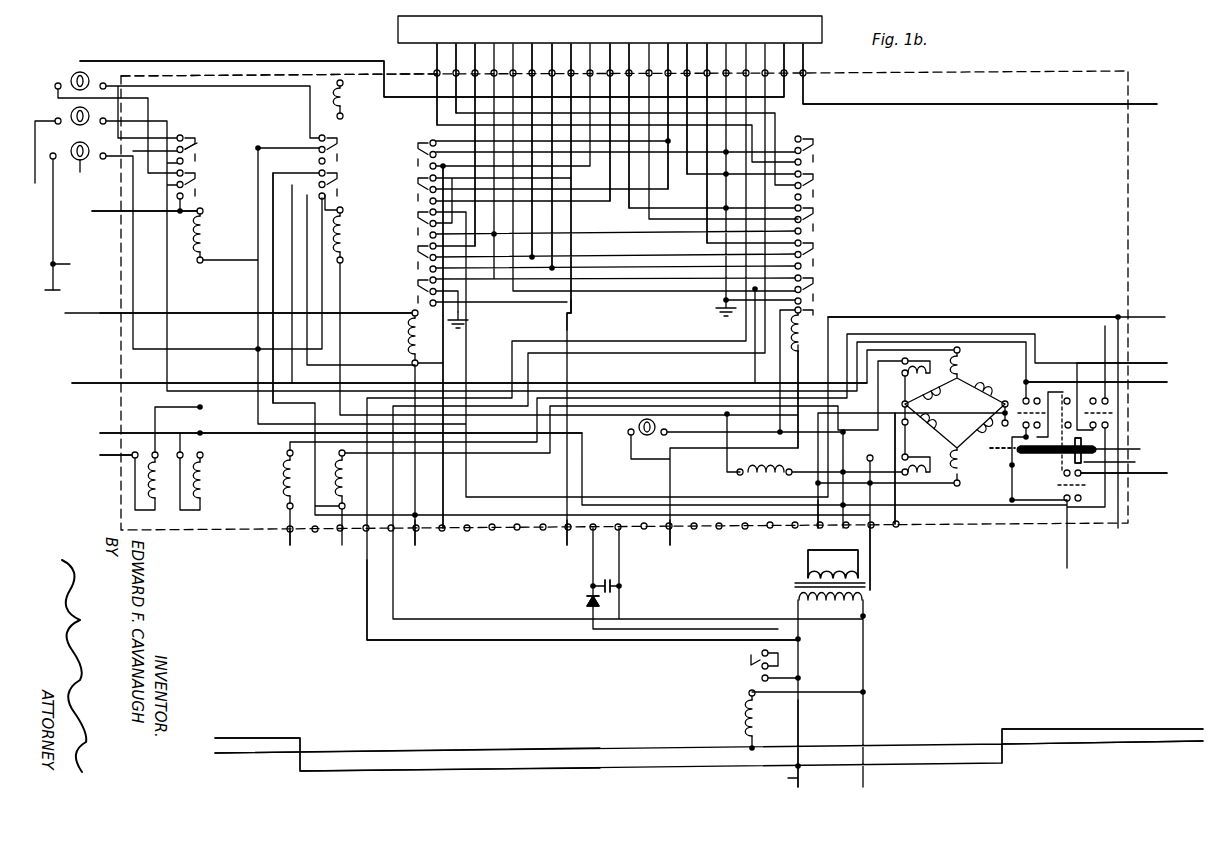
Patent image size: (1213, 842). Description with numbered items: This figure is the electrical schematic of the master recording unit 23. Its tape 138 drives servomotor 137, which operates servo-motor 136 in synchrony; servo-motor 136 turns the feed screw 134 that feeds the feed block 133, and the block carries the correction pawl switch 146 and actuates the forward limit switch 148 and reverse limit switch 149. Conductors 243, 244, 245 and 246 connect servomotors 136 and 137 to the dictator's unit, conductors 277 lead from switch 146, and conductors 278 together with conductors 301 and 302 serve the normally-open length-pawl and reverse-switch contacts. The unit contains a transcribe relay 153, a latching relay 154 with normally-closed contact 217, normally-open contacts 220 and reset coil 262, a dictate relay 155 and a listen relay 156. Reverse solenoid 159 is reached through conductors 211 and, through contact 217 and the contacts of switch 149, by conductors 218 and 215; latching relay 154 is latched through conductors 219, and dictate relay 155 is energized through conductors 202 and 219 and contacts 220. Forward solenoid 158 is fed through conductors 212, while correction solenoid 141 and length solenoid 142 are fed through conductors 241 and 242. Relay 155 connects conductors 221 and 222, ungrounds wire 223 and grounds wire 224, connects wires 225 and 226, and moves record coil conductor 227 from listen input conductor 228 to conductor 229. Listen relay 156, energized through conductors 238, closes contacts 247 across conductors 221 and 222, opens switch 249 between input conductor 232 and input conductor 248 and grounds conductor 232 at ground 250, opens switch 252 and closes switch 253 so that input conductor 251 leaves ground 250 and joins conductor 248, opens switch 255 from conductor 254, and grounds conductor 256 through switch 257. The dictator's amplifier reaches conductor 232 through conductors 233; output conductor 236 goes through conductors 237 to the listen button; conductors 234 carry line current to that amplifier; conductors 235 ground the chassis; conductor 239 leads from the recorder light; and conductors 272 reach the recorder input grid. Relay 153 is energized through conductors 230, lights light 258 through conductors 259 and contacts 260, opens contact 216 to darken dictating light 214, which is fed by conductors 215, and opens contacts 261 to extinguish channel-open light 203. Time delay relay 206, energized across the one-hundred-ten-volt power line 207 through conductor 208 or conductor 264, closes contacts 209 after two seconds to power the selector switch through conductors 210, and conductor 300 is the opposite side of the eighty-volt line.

The light 203 is at (79, 73).
The light 258 is at (72, 111).
The conductors 259 is at (38, 149).
The dictating light 214 is at (92, 175).
The conductor 239 is at (168, 61).
The conductor 256 is at (438, 62).
The conductors 272 is at (806, 55).
The master recording unit 23 is at (992, 70).
The conductor 254 is at (437, 50).
The input conductor 251 is at (456, 52).
The input conductor 248 is at (475, 52).
The conductor 221 is at (532, 52).
The output conductor 236 is at (571, 52).
The wire 224 is at (629, 52).
The conductor 229 is at (668, 52).
The listen input conductor 228 is at (707, 52).
The normally-closed contact 216 is at (197, 131).
The switch contacts 260 is at (200, 150).
The switch contacts 261 is at (200, 181).
The normally-closed contact 217 is at (340, 160).
The normally-open contacts 220 is at (340, 186).
The reset coil 262 is at (348, 101).
The conductors 230 is at (129, 214).
The transcribe relay 153 is at (206, 215).
The latching relay 154 is at (347, 233).
The conductors 218 is at (1042, 307).
The conductors 215 is at (68, 288).
The conductors 202 is at (240, 321).
The conductors 211 is at (290, 302).
The conductors 219 is at (320, 286).
The dictate relay 155 is at (422, 340).
The conductors 233 is at (1165, 317).
The servomotor 137 is at (962, 378).
The tape 138 is at (1002, 363).
The reverse limit switch 149 is at (1018, 397).
The correction pawl switch 146 is at (1057, 392).
The conductors 277 is at (1138, 366).
The conductor 302 is at (1112, 385).
The forward limit switch 148 is at (1112, 420).
The feed screw 134 is at (1097, 448).
The feed block 133 is at (1120, 456).
The conductors 278 is at (1141, 476).
The conductor 301 is at (1067, 530).
The servo-motor 136 is at (962, 458).
The conductors 241 is at (323, 434).
The conductors 242 is at (98, 456).
The length solenoid 142 is at (158, 512).
The correction solenoid 141 is at (212, 500).
The forward solenoid 158 is at (282, 481).
The reverse solenoid 159 is at (335, 455).
The conductors 212 is at (281, 555).
The conductors 235 is at (416, 550).
The conductors 237 is at (564, 551).
The conductor 300 is at (620, 585).
The conductors 210 is at (586, 593).
The conductors 238 is at (669, 548).
The conductors 243 is at (817, 523).
The conductors 244 is at (808, 562).
The conductors 245 is at (870, 565).
The conductors 246 is at (901, 494).
The conductors 234 is at (450, 610).
The contacts 209 is at (748, 668).
The time delay relay 206 is at (745, 705).
The conductor 208 is at (258, 763).
The power line 207 is at (798, 778).
The conductor 264 is at (1080, 746).
The wire 226 is at (468, 177).
The record coil conductor 227 is at (690, 171).
The wire 225 is at (612, 205).
The conductor 222 is at (702, 261).
The wire 223 is at (459, 280).
The input conductor 232 is at (538, 292).
The ground 250 is at (711, 309).
The switch 257 is at (822, 151).
The switch 255 is at (822, 178).
The switch 252 is at (822, 213).
The switch 253 is at (822, 222).
The contacts 247 is at (822, 256).
The switch 249 is at (822, 281).
The listen relay 156 is at (822, 318).